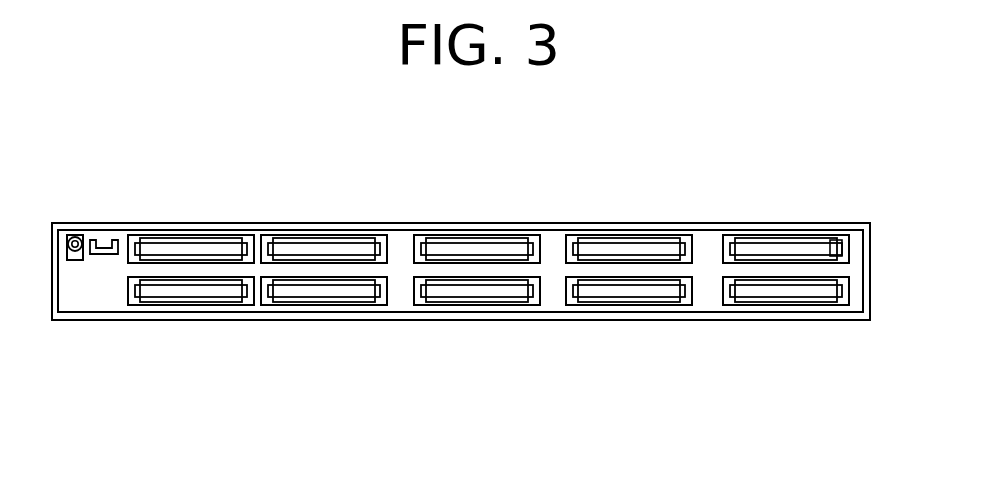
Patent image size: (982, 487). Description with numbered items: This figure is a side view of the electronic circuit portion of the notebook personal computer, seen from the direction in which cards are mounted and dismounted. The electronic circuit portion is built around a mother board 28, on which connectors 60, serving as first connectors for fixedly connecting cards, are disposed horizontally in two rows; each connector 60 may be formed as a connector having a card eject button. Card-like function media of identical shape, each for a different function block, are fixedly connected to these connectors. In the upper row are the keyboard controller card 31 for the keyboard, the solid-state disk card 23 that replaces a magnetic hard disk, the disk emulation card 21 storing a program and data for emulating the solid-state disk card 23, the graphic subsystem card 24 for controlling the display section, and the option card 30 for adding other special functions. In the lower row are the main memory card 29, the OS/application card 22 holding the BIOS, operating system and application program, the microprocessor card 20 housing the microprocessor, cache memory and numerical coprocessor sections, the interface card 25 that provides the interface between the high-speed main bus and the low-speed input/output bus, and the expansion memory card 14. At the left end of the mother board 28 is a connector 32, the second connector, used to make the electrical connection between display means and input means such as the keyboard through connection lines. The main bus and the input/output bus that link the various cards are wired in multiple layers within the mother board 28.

The expansion memory card 14 is at (777, 292).
The microprocessor card 20 is at (480, 292).
The disk emulation card 21 is at (470, 248).
The OS/application card 22 is at (328, 292).
The solid-state disk card 23 is at (323, 248).
The graphic subsystem card 24 is at (627, 250).
The interface card 25 is at (620, 292).
The mother board 28 is at (550, 237).
The main memory card 29 is at (194, 292).
The option card 30 is at (768, 237).
The keyboard controller card 31 is at (178, 240).
The connector (second connector) 32 is at (52, 208).
The connectors (first connectors) 60 is at (846, 237).